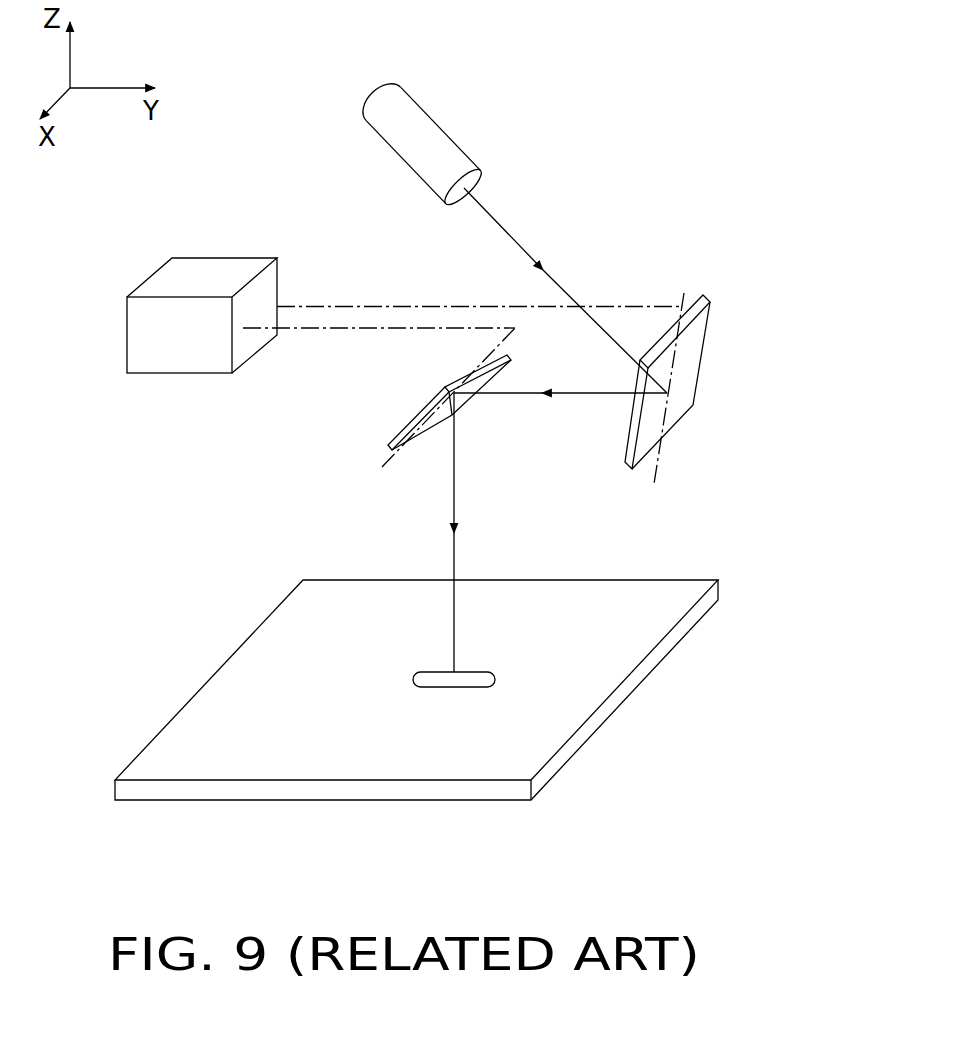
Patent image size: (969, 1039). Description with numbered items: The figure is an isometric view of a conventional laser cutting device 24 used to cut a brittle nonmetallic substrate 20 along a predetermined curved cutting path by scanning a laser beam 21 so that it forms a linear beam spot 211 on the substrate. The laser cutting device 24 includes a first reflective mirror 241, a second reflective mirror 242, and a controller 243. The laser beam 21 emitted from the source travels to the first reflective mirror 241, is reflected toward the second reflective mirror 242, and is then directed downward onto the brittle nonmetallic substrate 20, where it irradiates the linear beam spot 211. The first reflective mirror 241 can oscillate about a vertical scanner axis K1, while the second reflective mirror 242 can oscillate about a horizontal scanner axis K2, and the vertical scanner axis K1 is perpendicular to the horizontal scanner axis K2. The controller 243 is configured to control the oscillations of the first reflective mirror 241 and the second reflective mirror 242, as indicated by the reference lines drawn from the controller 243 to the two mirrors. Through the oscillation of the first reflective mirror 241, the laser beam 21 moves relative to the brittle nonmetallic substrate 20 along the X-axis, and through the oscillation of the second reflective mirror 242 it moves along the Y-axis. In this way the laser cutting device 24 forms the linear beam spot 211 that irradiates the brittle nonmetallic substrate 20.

The brittle nonmetallic substrate 20 is at (322, 598).
The laser beam 21 is at (508, 230).
The laser cutting device 24 is at (690, 192).
The linear beam spot 211 is at (472, 678).
The first reflective mirror 241 is at (693, 350).
The second reflective mirror 242 is at (420, 420).
The controller 243 is at (207, 270).
The vertical scanner axis K1 is at (658, 457).
The horizontal scanner axis K2 is at (488, 360).